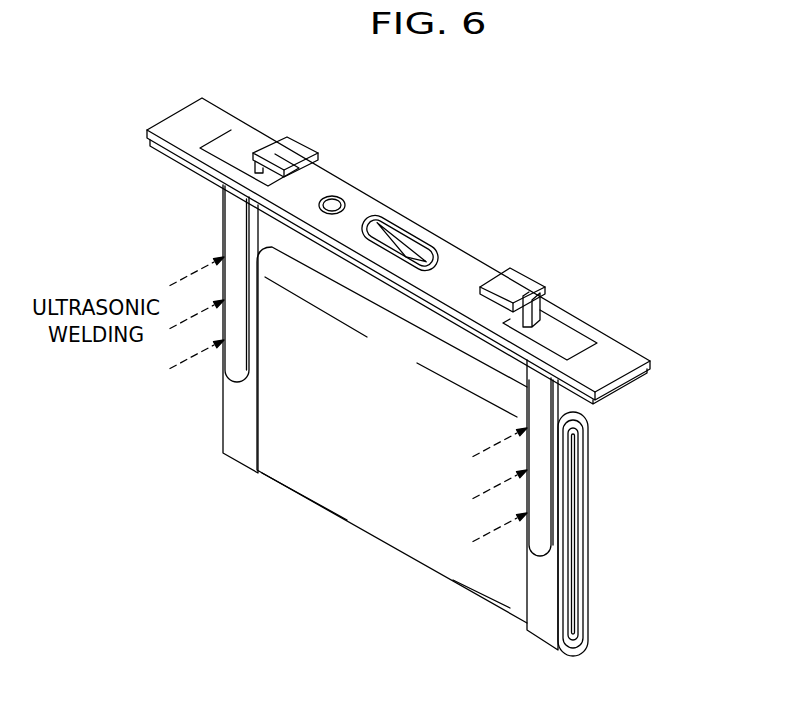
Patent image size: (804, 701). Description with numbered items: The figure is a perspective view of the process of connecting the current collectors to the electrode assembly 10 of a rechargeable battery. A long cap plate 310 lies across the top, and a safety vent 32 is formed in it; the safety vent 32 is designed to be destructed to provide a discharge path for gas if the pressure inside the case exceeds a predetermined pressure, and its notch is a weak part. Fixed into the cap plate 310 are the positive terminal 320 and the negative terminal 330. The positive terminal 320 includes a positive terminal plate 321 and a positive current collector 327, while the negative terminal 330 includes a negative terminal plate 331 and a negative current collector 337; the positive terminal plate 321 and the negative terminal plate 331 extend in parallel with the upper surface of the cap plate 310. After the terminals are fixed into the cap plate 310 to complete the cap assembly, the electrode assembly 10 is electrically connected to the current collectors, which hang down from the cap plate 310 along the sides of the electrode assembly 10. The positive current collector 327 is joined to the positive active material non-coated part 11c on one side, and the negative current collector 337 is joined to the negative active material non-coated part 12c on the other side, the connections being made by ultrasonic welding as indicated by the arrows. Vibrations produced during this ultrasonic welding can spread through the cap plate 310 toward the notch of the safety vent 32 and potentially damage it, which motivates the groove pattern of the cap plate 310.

The electrode assembly 10 is at (588, 580).
The positive active material non-coated part 11c is at (233, 432).
The negative active material non-coated part 12c is at (532, 600).
The safety vent 32 is at (410, 237).
The cap plate 310 is at (607, 340).
The positive terminal 320 is at (333, 133).
The positive terminal plate 321 is at (288, 138).
The positive current collector 327 is at (232, 362).
The negative terminal 330 is at (557, 273).
The negative terminal plate 331 is at (515, 270).
The negative current collector 337 is at (535, 547).